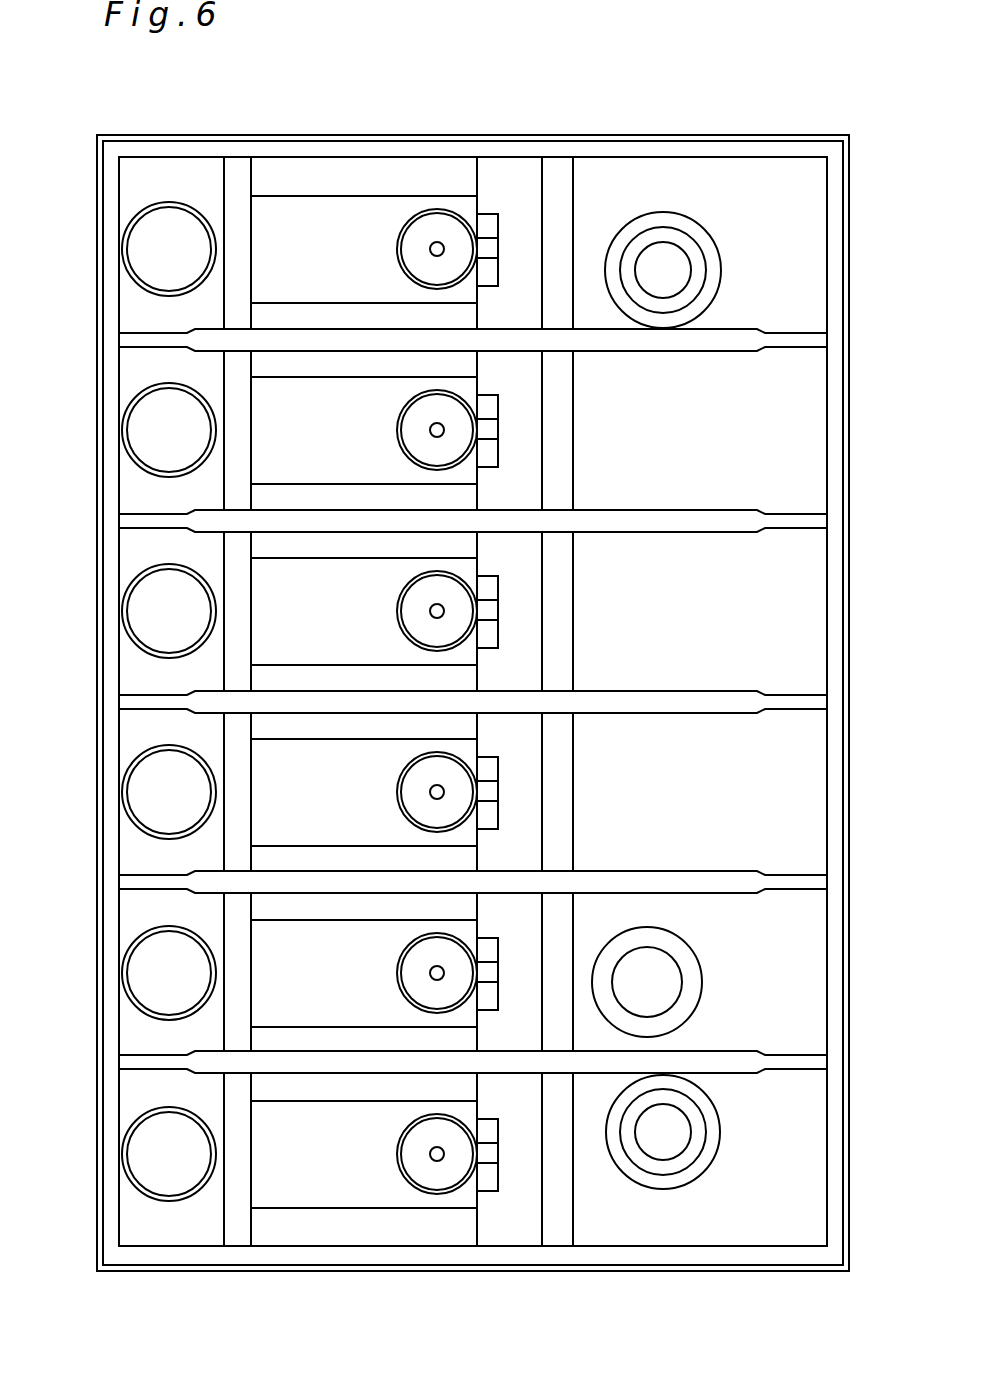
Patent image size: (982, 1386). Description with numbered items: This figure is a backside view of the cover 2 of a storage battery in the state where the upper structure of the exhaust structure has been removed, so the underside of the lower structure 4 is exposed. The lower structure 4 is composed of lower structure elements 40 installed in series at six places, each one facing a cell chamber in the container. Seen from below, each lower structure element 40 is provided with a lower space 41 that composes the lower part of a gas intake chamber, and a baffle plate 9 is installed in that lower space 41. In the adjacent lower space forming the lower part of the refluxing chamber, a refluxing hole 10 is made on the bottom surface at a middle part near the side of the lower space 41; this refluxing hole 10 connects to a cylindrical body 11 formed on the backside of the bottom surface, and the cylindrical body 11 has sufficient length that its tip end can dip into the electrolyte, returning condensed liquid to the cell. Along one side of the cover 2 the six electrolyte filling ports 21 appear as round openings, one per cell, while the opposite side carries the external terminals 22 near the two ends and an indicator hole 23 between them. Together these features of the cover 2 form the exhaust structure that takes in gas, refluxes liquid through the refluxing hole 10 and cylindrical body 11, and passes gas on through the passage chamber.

The cover 2 is at (377, 141).
The lower structure 4 is at (311, 152).
The baffle plate 9 is at (490, 610).
The refluxing hole 10 is at (440, 608).
The cylindrical body 11 is at (448, 652).
The electrolyte filling port 21 is at (158, 610).
The external terminal 22 is at (675, 265).
The indicator hole 23 is at (657, 977).
The lower structure element 40 is at (556, 229).
The lower space 41 is at (522, 790).